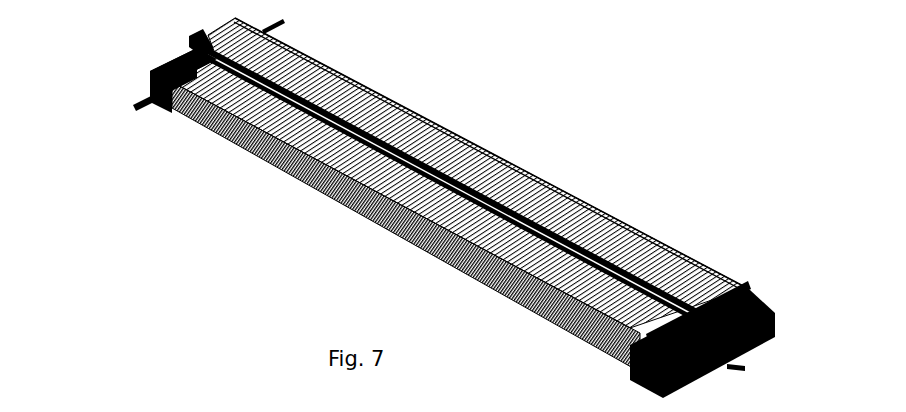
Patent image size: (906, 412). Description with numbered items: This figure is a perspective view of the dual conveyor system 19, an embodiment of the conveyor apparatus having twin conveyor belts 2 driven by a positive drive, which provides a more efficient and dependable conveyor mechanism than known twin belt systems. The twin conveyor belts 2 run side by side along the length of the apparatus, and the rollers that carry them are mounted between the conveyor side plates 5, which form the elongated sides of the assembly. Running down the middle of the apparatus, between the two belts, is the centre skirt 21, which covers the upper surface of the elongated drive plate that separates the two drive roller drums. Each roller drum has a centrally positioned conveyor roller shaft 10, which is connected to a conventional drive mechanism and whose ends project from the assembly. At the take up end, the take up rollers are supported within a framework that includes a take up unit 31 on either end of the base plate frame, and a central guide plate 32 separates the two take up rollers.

The dual conveyor system 19 is at (422, 204).
The conveyor belt 2 is at (377, 110).
The centre skirt 21 is at (283, 82).
The conveyor side plate 5 is at (257, 152).
The conveyor roller shaft 10 is at (147, 93).
The take up unit 31 is at (630, 370).
The central guide plate 32 is at (703, 312).